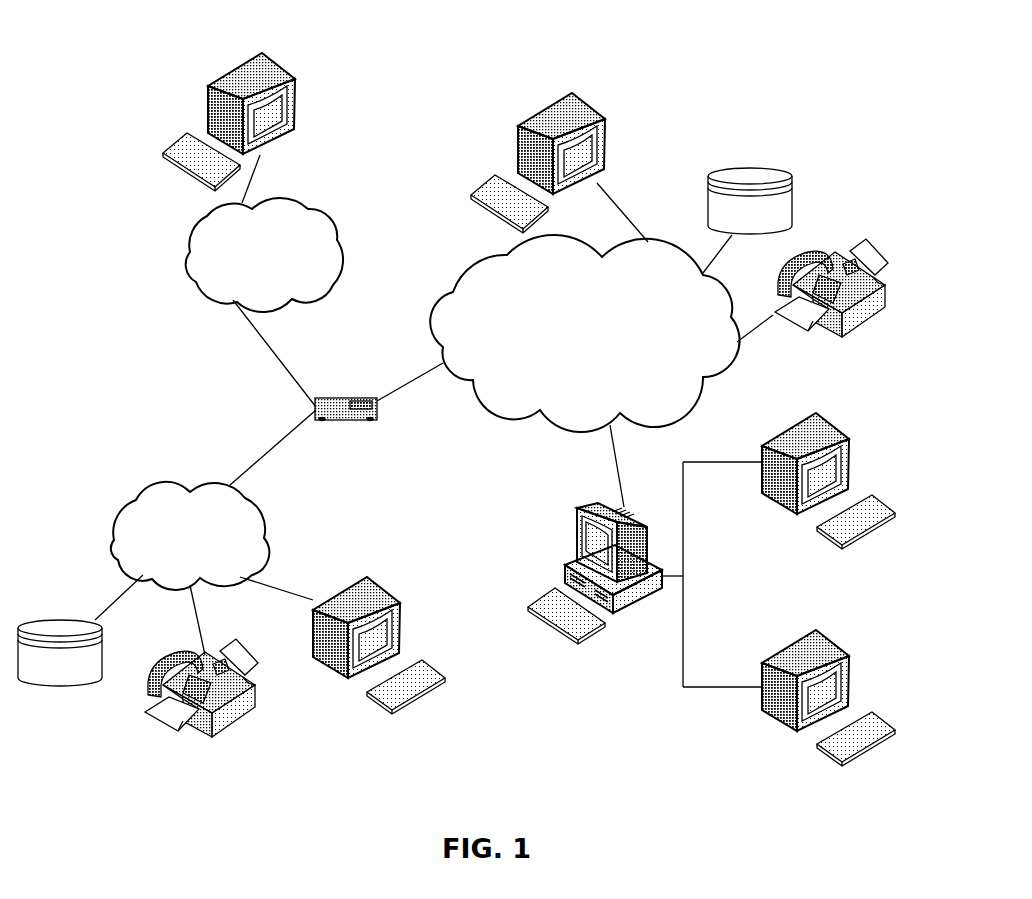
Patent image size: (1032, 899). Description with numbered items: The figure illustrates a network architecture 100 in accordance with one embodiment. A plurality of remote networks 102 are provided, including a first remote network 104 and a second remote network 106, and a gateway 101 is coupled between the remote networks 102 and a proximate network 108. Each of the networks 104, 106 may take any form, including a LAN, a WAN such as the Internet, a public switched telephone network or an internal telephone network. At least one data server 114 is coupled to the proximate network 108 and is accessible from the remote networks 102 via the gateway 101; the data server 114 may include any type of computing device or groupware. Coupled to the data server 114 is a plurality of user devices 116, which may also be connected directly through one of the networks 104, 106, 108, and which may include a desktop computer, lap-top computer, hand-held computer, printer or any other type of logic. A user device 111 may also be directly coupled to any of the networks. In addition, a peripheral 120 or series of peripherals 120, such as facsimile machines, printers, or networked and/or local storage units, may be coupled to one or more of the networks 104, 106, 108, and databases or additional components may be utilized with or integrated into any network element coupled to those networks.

The architecture 100 is at (140, 38).
The gateway 101 is at (330, 398).
The remote networks 102 is at (168, 320).
The first remote network 104 is at (118, 504).
The second remote network 106 is at (338, 228).
The proximate network 108 is at (693, 402).
The user device 111 is at (605, 129).
The data server 114 is at (578, 527).
The user devices 116 is at (297, 94).
The peripheral 120 is at (792, 181).